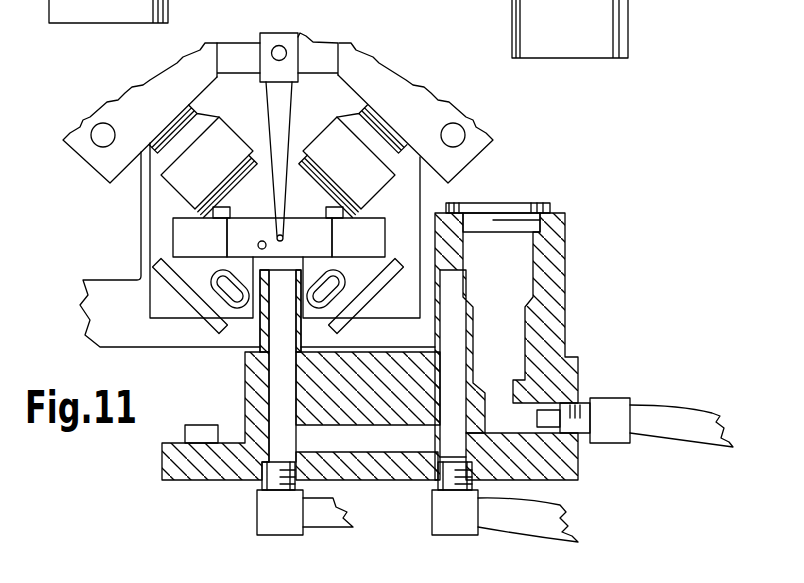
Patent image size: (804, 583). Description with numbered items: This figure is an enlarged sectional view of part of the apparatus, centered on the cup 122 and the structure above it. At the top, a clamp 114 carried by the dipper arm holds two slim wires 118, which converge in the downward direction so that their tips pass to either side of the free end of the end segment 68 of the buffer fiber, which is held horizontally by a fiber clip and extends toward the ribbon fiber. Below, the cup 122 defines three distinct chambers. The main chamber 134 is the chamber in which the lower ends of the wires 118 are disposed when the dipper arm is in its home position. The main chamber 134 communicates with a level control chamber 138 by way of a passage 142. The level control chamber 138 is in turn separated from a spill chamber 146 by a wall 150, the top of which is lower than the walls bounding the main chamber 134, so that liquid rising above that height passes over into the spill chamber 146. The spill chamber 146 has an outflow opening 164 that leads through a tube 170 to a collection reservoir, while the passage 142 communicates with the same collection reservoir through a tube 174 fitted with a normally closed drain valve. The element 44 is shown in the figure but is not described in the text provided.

The housing 44 is at (511, 2).
The end segment 68 is at (283, 238).
The clamp 114 is at (289, 33).
The wires 118 is at (263, 127).
The cup 122 is at (262, 303).
The main chamber 134 is at (263, 402).
The level control chamber 138 is at (453, 325).
The passage 142 is at (398, 435).
The spill chamber 146 is at (497, 353).
The wall 150 is at (480, 333).
The outflow opening 164 is at (537, 419).
The tube 170 is at (683, 405).
The tube 174 is at (550, 503).